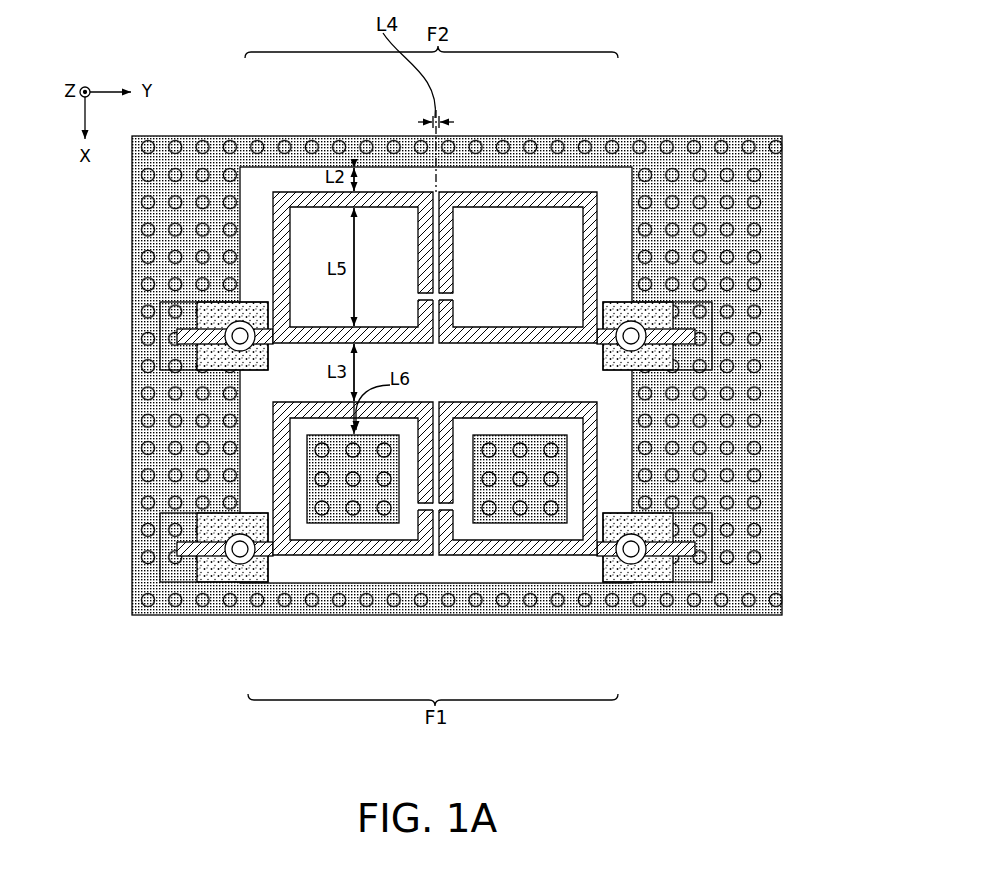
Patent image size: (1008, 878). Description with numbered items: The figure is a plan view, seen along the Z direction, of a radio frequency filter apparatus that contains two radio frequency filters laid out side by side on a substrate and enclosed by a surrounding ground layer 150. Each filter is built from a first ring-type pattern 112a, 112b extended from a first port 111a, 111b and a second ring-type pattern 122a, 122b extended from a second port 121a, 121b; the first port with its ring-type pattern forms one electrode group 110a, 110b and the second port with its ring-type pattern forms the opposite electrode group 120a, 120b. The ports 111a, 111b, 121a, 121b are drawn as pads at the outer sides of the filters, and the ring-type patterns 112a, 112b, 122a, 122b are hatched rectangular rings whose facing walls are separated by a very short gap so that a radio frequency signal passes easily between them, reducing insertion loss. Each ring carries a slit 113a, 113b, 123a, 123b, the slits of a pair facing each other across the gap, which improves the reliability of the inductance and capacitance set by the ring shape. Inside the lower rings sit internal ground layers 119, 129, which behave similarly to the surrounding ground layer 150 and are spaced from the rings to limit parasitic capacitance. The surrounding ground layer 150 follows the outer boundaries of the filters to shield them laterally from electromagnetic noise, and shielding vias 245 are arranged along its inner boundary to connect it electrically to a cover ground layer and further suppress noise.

The first electrode 110a is at (297, 547).
The first port 111a is at (245, 589).
The first ring-type pattern 112a is at (302, 556).
The slit 113a is at (421, 514).
The first electrode 110b is at (297, 214).
The first port 111b is at (258, 297).
The first ring-type pattern 112b is at (301, 192).
The slit 113b is at (420, 292).
The second electrode 120a is at (575, 547).
The second port 121a is at (628, 591).
The second ring-type pattern 122a is at (573, 556).
The slit 123a is at (449, 514).
The second electrode 120b is at (575, 214).
The second port 121b is at (617, 297).
The second ring-type pattern 122b is at (573, 192).
The slit 123b is at (451, 292).
The internal ground layer 119 is at (315, 464).
The internal ground layer 129 is at (555, 463).
The surrounding ground layer 150 is at (786, 318).
The shielding via 245 is at (697, 164).